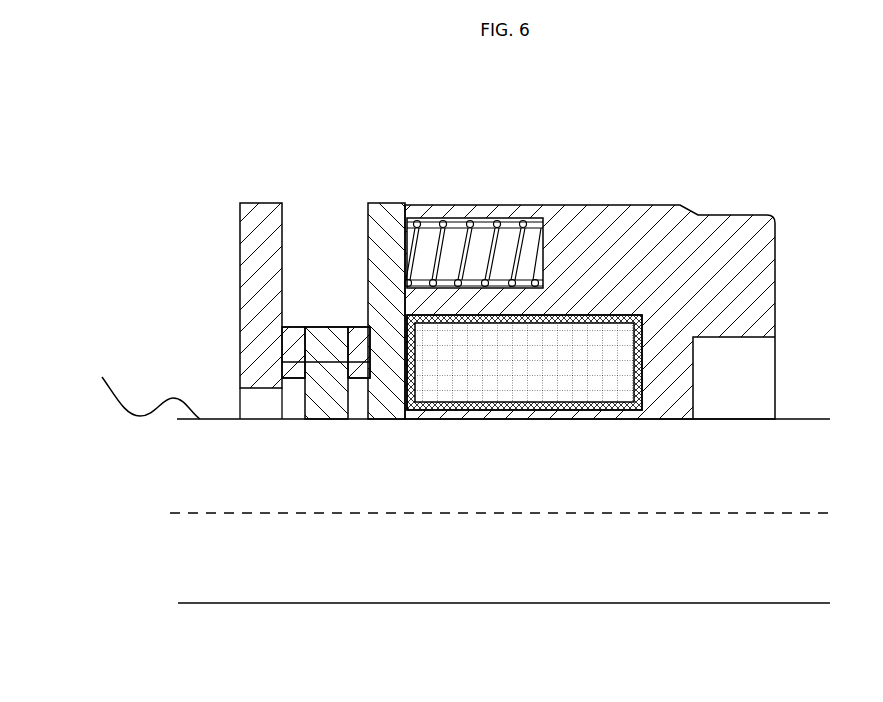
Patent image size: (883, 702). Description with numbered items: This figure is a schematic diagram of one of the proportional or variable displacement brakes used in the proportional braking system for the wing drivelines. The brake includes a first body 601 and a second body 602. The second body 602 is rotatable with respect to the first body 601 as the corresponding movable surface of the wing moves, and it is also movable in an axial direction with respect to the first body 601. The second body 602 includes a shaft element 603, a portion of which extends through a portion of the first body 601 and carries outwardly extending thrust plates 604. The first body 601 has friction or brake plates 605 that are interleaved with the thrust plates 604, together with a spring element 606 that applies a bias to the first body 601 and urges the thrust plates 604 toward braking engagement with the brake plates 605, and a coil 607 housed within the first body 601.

The first body 601 is at (763, 230).
The second body 602 is at (240, 231).
The shaft element 603 is at (143, 386).
The thrust plates 604 is at (323, 325).
The brake plates 605 is at (292, 345).
The spring element 606 is at (467, 240).
The coil 607 is at (555, 362).